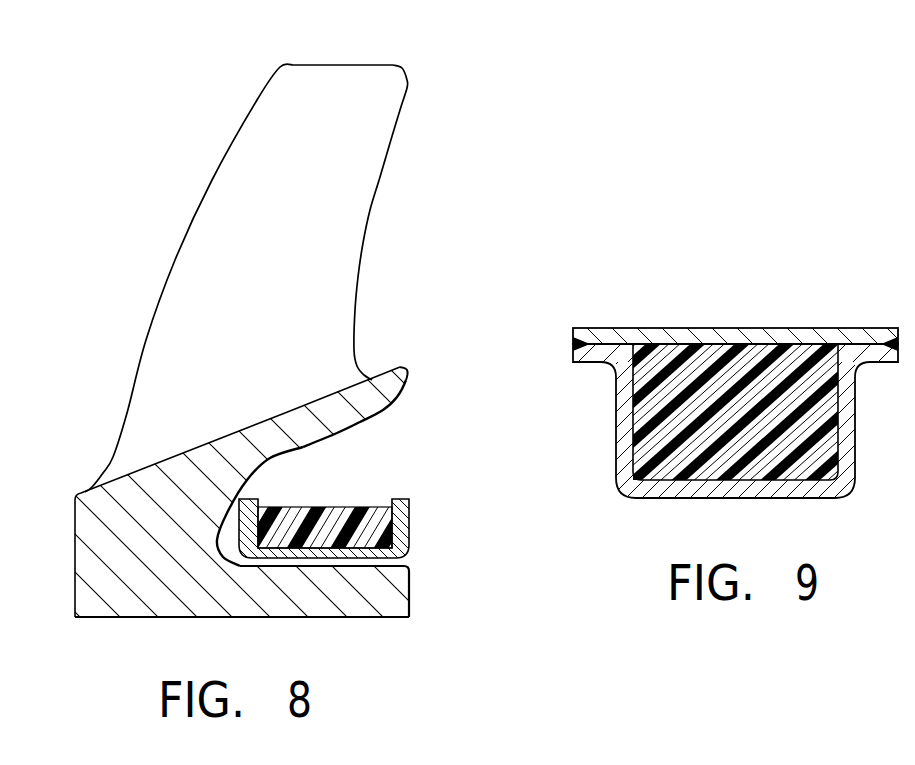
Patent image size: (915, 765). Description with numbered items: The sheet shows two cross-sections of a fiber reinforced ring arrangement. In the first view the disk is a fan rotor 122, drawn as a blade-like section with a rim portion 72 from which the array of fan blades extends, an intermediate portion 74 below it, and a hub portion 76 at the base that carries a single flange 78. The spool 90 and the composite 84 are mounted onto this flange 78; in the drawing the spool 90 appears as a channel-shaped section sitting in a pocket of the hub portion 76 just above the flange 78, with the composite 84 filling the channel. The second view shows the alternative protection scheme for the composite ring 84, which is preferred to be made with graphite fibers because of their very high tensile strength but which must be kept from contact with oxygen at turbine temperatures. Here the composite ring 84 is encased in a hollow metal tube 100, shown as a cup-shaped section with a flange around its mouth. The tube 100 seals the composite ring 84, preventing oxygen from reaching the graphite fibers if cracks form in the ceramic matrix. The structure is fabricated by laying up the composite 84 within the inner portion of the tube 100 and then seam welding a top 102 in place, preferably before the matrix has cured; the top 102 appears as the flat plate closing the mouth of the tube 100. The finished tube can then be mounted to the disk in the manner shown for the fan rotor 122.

In FIG. 8, the rim portion 72 is at (337, 412).
In FIG. 8, the intermediate portion 74 is at (178, 550).
In FIG. 8, the hub portion 76 is at (238, 600).
In FIG. 8, the flange 78 is at (376, 597).
In FIG. 8, the composite ring 84 is at (338, 512).
In FIG. 9, the composite ring 84 is at (752, 420).
In FIG. 8, the spool 90 is at (409, 519).
In FIG. 8, the fan rotor 122 is at (410, 372).
In FIG. 9, the hollow metal tube 100 is at (692, 369).
In FIG. 9, the top 102 is at (747, 337).